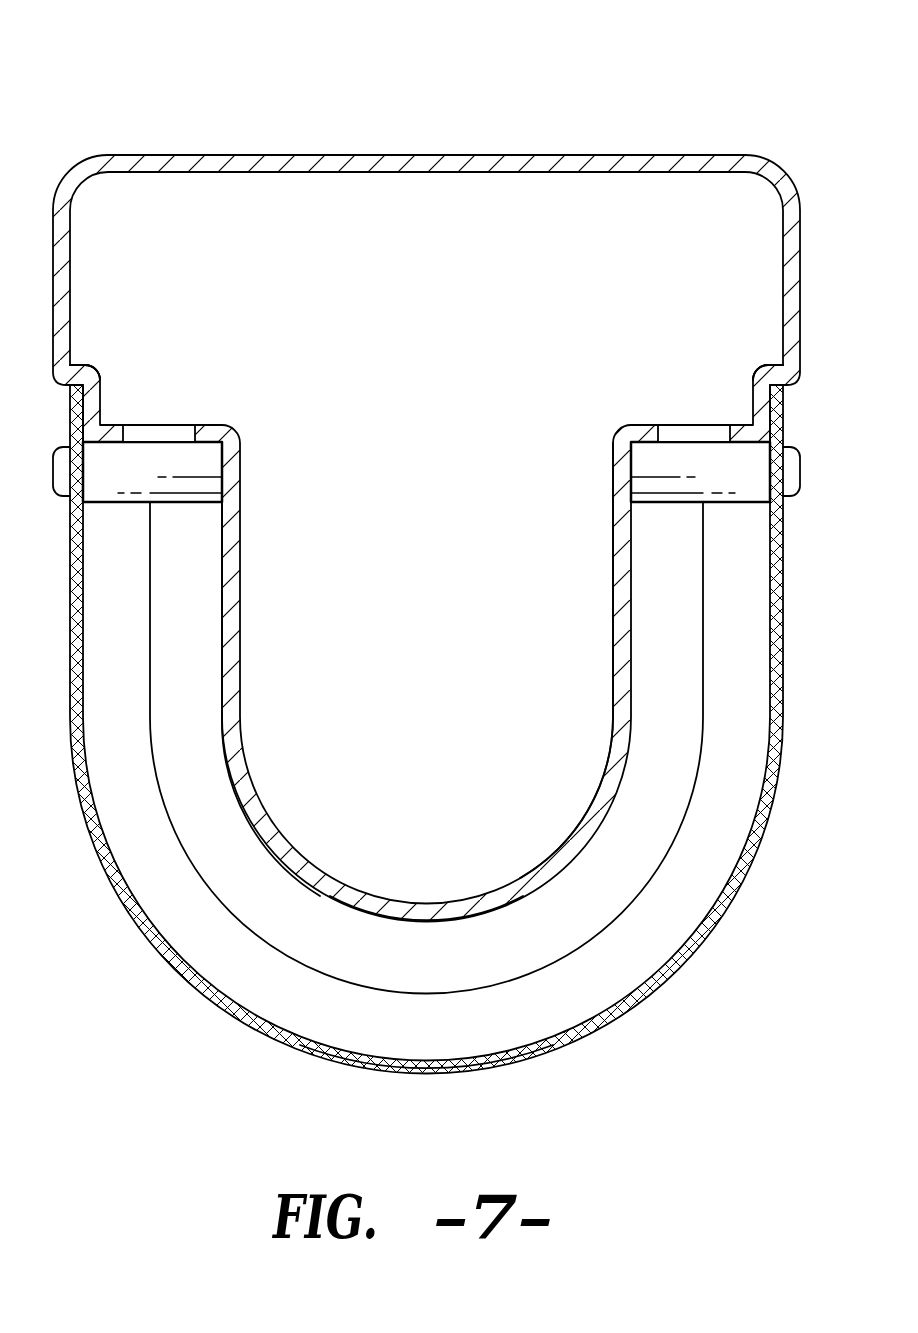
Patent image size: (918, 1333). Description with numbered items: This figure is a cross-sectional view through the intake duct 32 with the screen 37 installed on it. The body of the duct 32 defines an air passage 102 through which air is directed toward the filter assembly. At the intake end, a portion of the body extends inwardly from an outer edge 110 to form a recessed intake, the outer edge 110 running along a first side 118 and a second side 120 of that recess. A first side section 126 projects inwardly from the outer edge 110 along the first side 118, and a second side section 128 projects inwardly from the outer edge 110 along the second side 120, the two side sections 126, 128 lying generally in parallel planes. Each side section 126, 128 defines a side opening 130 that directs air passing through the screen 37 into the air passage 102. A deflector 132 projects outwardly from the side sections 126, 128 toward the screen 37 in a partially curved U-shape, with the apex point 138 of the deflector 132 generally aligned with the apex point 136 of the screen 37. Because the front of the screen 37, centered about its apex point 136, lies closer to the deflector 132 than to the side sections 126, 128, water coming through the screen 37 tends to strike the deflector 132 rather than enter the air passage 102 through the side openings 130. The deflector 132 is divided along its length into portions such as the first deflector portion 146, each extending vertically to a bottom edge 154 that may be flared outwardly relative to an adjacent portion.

The intake duct 32 is at (426, 562).
The screen 37 is at (183, 978).
The air passage 102 is at (450, 325).
The outer edge 110 is at (426, 372).
The first side 118 is at (100, 380).
The second side 120 is at (753, 380).
The first side section 126 is at (238, 365).
The second side section 128 is at (756, 365).
The side openings 130 is at (178, 432).
The deflector 132 is at (273, 825).
The first deflector portion 146 is at (578, 828).
The apex point of the deflector 138 is at (427, 923).
The bottom edge 154 is at (427, 992).
The apex point of the screen 136 is at (427, 1075).